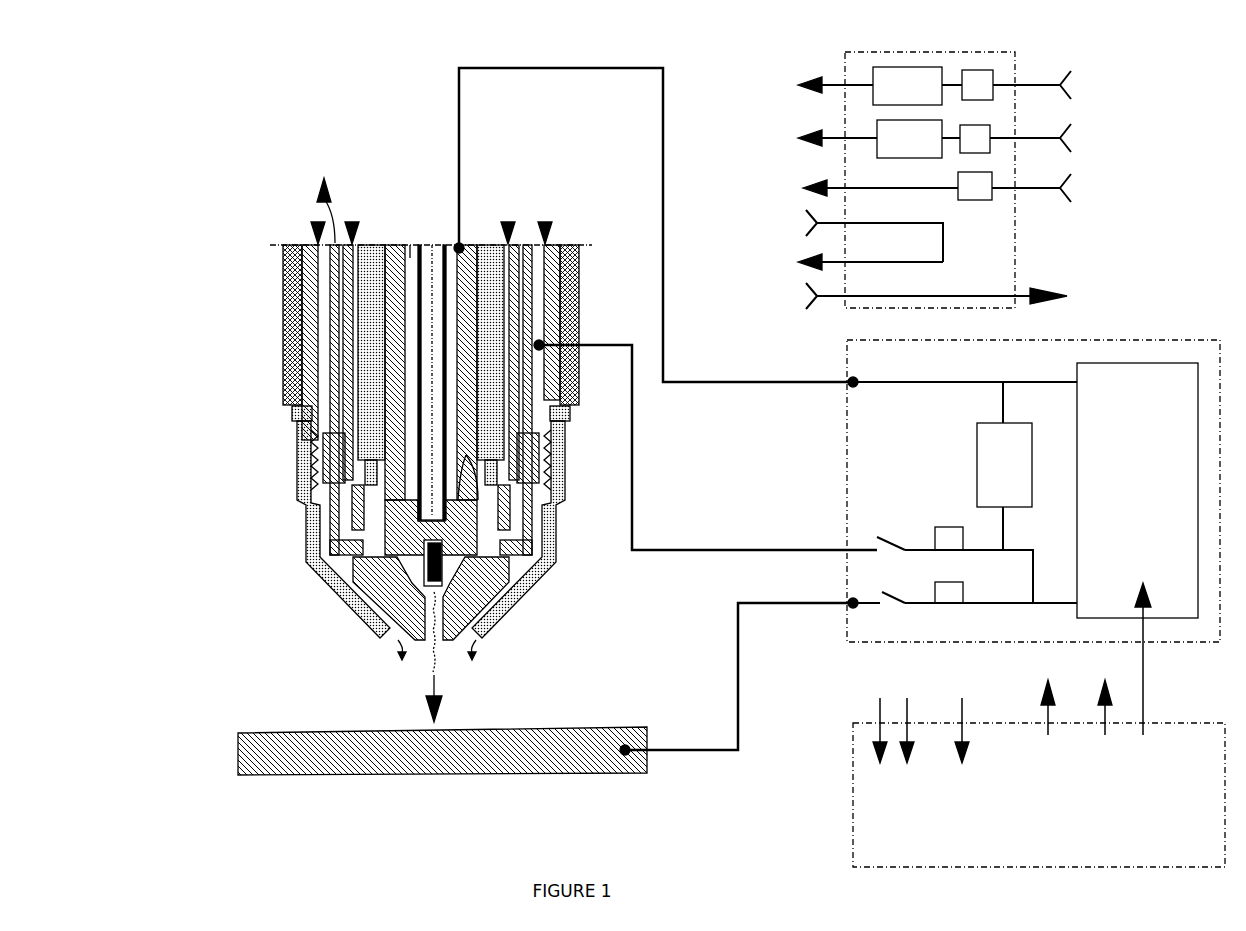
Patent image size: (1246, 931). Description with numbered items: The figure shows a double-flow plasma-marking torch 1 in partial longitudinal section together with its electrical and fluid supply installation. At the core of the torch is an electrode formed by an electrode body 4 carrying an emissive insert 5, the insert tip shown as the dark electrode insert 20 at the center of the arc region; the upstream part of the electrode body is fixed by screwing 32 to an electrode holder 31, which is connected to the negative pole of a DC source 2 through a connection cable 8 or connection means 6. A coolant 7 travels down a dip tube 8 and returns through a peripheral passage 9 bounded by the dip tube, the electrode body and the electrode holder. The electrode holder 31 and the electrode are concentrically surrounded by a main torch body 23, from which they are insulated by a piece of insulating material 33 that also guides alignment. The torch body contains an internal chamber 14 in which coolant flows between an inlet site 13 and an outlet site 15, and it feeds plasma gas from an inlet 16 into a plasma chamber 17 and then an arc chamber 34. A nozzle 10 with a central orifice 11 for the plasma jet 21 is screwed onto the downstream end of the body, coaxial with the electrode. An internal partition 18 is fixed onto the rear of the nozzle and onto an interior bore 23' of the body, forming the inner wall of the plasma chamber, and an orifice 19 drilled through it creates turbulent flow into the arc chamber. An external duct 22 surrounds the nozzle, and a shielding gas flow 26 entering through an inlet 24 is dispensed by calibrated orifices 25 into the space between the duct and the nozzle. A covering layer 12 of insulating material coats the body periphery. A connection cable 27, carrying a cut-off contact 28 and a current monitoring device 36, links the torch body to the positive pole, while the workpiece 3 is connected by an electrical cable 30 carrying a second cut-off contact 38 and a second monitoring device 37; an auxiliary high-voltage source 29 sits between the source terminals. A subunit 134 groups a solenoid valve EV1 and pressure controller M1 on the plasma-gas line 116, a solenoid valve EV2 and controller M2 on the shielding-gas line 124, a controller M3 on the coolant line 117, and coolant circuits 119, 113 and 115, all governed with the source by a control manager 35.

The plasma-marking torch 1 is at (225, 626).
The DC source 2 is at (847, 473).
The workpiece 3 is at (550, 730).
The electrode body 4 is at (345, 598).
The emissive insert 5 is at (497, 600).
The connection means 6 is at (663, 207).
The coolant 7 is at (432, 205).
The dip tube 8 is at (442, 257).
The peripheral passage 9 is at (410, 258).
The nozzle 10 is at (363, 600).
The central orifice 11 is at (443, 640).
The covering layer 12 is at (284, 277).
The inlet site 13 is at (527, 222).
The internal chamber 14 is at (520, 515).
The outlet site 15 is at (312, 201).
The plasma gas inlet 16 is at (352, 222).
The plasma chamber 17 is at (507, 443).
The internal partition 18 is at (377, 420).
The orifice 19 is at (330, 497).
The electrode insert 20 is at (424, 560).
The plasma jet 21 is at (430, 650).
The external duct 22 is at (485, 620).
The main torch body 23 is at (399, 342).
The interior bore 23' is at (397, 373).
The shielding gas inlet 24 is at (318, 222).
The calibrated orifices 25 is at (323, 467).
The shielding gas flow 26 is at (393, 660).
The electrical connection cable 27 is at (690, 550).
The cut-off contact 28 is at (890, 525).
The auxiliary electricity source 29 is at (990, 468).
The electrical cable 30 is at (737, 672).
The electrode holder 31 is at (397, 245).
The screwing 32 is at (480, 352).
The piece of insulating material 33 is at (377, 245).
The arc chamber 34 is at (520, 545).
The control manager 35 is at (858, 825).
The current flow monitoring device 36 is at (950, 527).
The second current flow monitoring device 37 is at (948, 585).
The second cut-off contact 38 is at (895, 590).
The coolant circuit 113 is at (847, 264).
The coolant circuit 115 is at (915, 303).
The plasma-gas supply line 116 is at (911, 85).
The coolant supply line 117 is at (916, 188).
The coolant circuit 119 is at (847, 236).
The shielding-gas supply line 124 is at (911, 138).
The subunit 134 is at (855, 68).
The pressure controller M1 is at (980, 82).
The pressure controller M2 is at (975, 140).
The pressure controller M3 is at (965, 188).
The solenoid valve EV1 is at (970, 401).
The solenoid valve EV2 is at (999, 427).